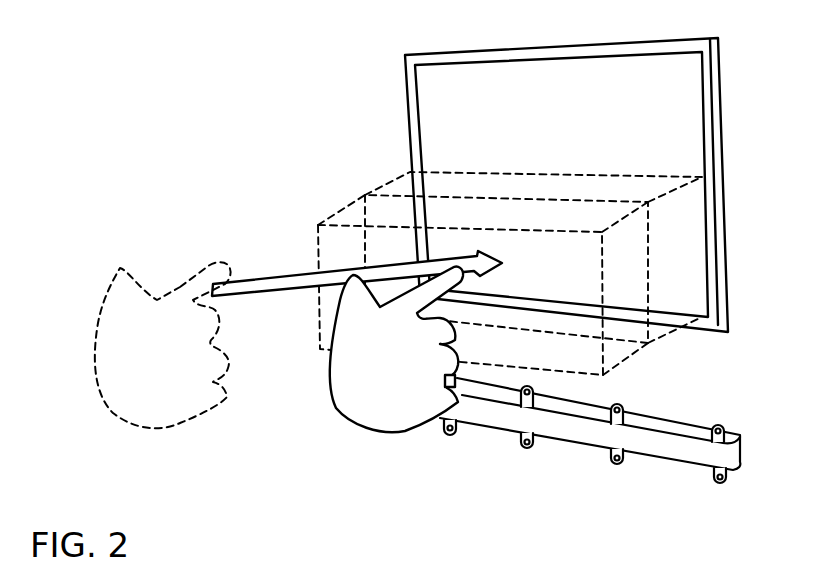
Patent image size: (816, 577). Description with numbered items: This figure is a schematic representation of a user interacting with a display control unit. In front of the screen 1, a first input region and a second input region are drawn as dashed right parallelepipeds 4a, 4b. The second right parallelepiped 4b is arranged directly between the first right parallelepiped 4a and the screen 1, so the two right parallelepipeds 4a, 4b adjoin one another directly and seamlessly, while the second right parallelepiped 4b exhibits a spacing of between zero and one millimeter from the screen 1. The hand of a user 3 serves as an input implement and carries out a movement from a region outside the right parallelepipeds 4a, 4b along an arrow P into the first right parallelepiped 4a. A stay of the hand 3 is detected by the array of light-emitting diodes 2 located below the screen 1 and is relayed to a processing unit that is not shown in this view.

The screen 1 is at (600, 49).
The array of light-emitting diodes 2 is at (506, 422).
The hand of a user 3 is at (279, 347).
The first right parallelepiped 4a is at (353, 215).
The second right parallelepiped 4b is at (403, 187).
The arrow P is at (294, 283).